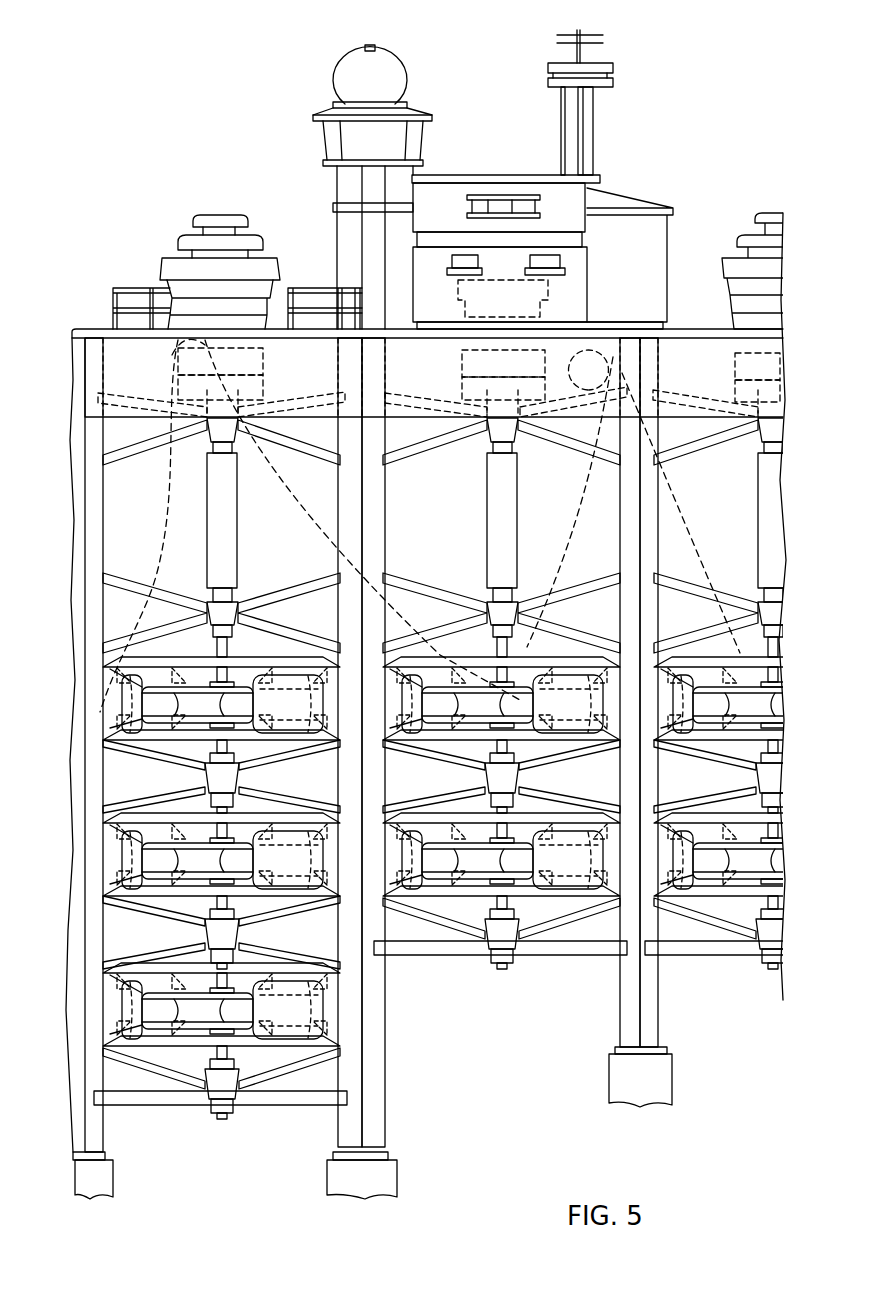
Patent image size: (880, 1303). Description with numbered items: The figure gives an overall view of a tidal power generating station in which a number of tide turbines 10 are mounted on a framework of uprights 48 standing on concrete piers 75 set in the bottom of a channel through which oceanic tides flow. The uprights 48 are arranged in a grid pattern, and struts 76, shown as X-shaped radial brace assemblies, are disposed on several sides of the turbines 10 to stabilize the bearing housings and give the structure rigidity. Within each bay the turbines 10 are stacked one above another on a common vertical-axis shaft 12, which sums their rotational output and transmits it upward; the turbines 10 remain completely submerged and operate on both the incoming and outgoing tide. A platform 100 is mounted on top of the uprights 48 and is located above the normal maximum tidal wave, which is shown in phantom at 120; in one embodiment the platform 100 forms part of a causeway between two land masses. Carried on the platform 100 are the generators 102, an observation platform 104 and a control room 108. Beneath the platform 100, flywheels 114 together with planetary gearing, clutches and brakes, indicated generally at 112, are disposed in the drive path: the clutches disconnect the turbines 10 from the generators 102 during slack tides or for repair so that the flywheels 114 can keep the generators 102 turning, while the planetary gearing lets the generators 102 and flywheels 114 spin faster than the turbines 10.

The tide turbine 10 is at (237, 858).
The shaft 12 is at (230, 647).
The upright 48 is at (90, 991).
The concrete pier 75 is at (383, 1177).
The strut 76 is at (467, 933).
The platform 100 is at (683, 337).
The generator 102 is at (268, 273).
The observation platform 104 is at (330, 137).
The control room 108 is at (553, 193).
The planetary gearing, clutches and brakes 112 is at (270, 387).
The flywheel 114 is at (268, 364).
The normal maximum tidal wave 120 is at (185, 538).